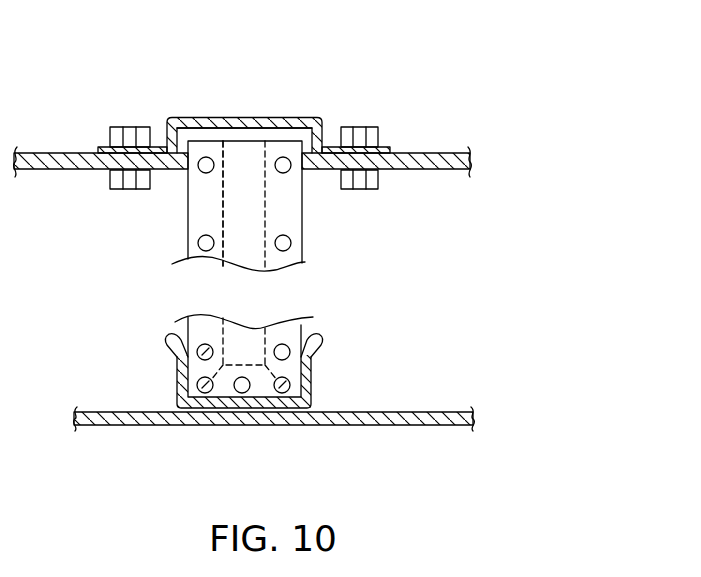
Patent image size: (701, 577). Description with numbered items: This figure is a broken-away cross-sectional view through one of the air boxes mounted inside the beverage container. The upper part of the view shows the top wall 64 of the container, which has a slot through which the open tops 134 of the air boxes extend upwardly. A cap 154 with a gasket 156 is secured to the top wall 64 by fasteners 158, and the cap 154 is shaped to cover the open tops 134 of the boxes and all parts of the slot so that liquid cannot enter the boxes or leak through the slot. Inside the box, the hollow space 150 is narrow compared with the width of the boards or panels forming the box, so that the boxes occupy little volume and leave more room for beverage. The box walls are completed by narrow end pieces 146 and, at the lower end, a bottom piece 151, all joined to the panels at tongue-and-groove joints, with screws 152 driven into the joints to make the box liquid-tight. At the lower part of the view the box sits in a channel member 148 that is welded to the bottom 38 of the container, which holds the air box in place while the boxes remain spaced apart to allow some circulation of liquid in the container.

The bottom 38 is at (383, 428).
The top wall 64 is at (441, 154).
The open tops 134 is at (243, 203).
The narrow end pieces 146 is at (188, 215).
The channel retainer 148 is at (313, 378).
The hollow space 150 is at (250, 224).
The bottom piece 151 is at (262, 389).
The screws 152 is at (198, 244).
The cap 154 is at (319, 132).
The gasket 156 is at (243, 132).
The fasteners 158 is at (128, 127).